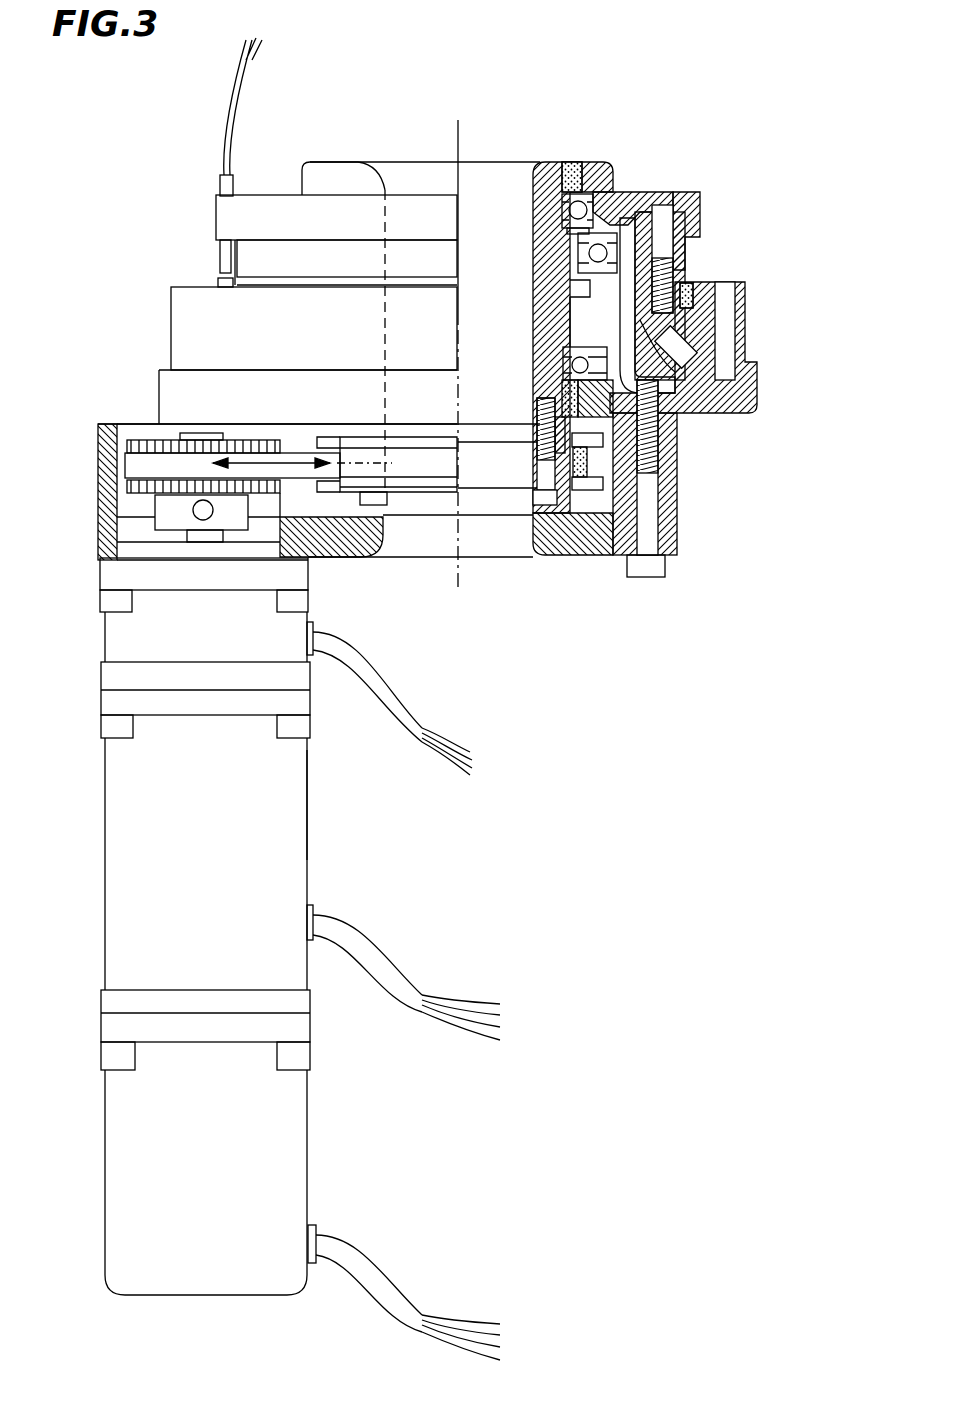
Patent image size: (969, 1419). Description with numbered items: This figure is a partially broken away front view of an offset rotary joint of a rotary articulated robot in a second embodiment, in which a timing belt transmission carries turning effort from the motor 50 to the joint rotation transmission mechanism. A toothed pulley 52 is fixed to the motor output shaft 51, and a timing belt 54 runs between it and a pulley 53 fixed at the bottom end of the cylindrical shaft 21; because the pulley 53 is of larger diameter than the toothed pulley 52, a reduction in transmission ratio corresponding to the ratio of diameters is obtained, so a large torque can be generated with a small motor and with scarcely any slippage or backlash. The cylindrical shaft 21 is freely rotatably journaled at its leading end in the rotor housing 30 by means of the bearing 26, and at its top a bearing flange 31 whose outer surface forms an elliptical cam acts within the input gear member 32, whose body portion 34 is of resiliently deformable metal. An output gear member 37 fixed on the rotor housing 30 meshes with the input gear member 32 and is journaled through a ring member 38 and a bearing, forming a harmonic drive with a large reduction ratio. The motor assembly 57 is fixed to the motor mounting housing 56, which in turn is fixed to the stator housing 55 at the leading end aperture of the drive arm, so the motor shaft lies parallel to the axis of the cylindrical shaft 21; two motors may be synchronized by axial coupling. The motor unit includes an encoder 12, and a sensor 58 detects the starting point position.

The encoder 12 is at (110, 655).
The cylindrical shaft 21 is at (515, 200).
The bearing 26 is at (622, 198).
The rotor housing 30 is at (590, 162).
The bearing flange 31 is at (588, 292).
The input gear member 32 is at (645, 215).
The body portion 34 is at (663, 375).
The output gear member 37 is at (690, 245).
The ring member 38 is at (718, 318).
The motor 50 is at (287, 813).
The motor output shaft 51 is at (187, 537).
The toothed pulley 52 is at (134, 440).
The pulley 53 is at (567, 480).
The timing belt 54 is at (303, 485).
The stator housing 55 is at (183, 357).
The motor mounting housing 56 is at (673, 525).
The motor assembly 57 is at (307, 864).
The sensor 58 is at (221, 260).